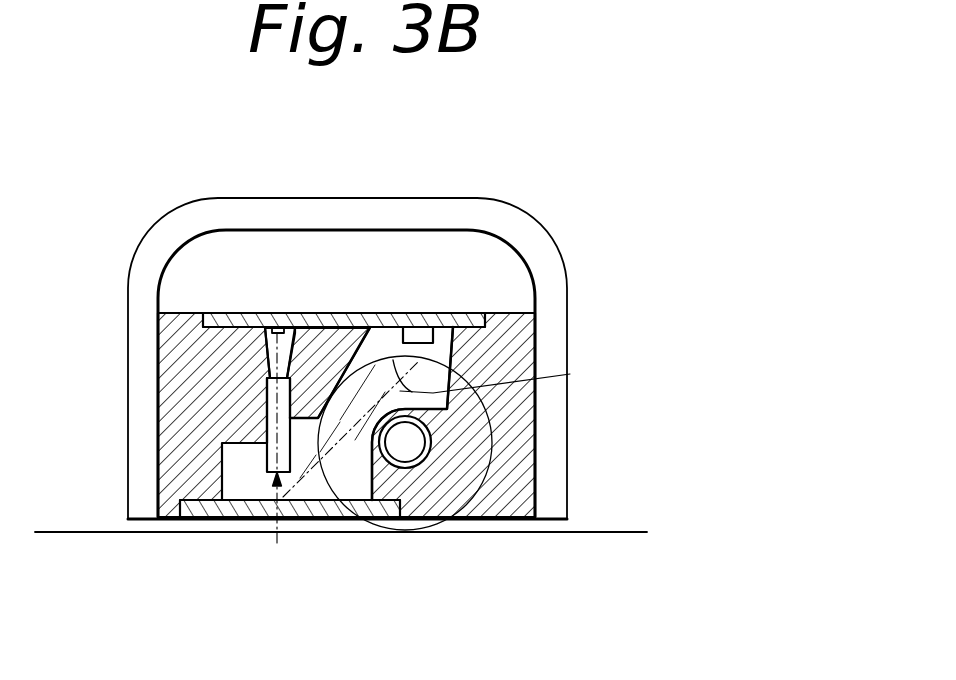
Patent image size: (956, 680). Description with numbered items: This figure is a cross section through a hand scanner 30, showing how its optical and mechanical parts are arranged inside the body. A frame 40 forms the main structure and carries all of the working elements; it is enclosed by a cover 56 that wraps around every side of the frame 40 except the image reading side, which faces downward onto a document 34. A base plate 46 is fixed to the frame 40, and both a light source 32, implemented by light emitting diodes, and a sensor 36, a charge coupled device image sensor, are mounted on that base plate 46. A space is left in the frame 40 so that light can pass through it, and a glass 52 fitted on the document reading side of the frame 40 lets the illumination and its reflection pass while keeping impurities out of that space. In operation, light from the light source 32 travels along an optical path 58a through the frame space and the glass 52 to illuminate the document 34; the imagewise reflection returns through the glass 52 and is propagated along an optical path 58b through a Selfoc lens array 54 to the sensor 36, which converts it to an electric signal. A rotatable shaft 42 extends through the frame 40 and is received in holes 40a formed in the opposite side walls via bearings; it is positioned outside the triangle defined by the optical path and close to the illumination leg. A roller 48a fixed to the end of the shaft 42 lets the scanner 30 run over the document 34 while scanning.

The hand scanner 30 is at (588, 240).
The light source 32 is at (418, 335).
The document 34 is at (100, 534).
The sensor 36 is at (283, 318).
The frame 40 is at (318, 338).
The holes 40a is at (422, 450).
The rotatable shaft 42 is at (393, 472).
The base plate 46 is at (336, 327).
The roller 48a is at (443, 522).
The glass 52 is at (232, 506).
The Selfoc lens array 54 is at (267, 390).
The cover 56 is at (522, 228).
The optical path 58a is at (570, 374).
The optical path 58b is at (268, 350).